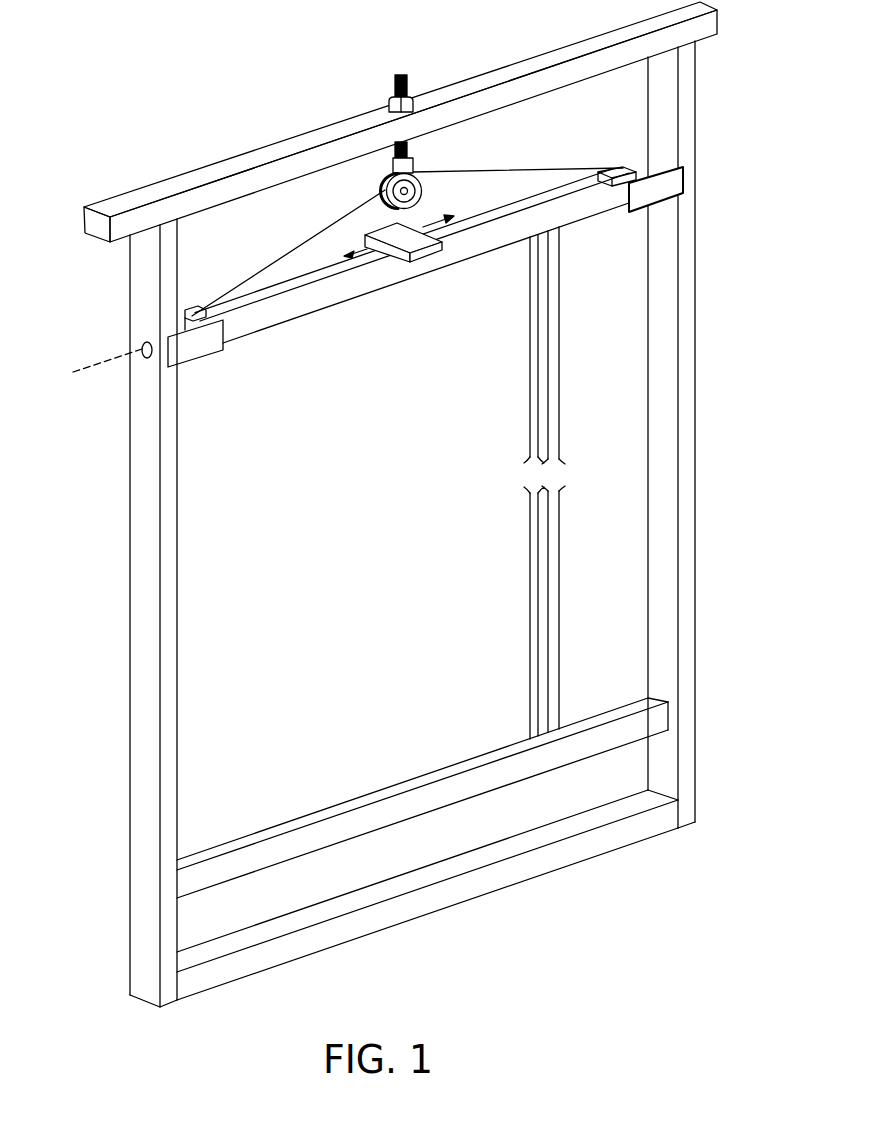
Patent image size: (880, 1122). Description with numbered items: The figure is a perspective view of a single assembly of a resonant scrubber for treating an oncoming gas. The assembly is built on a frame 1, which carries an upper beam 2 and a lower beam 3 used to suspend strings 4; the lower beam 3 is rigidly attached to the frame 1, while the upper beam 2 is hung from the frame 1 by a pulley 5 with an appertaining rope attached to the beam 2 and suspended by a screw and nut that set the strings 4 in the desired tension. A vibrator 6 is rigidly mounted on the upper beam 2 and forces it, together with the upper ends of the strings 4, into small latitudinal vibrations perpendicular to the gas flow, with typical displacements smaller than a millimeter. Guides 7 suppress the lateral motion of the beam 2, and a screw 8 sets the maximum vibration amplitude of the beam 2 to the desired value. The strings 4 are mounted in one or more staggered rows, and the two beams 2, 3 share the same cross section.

The frame 1 is at (663, 98).
The upper beam 2 is at (298, 305).
The lower beam 3 is at (283, 828).
The strings 4 is at (528, 642).
The pulley 5 is at (425, 188).
The vibrator 6 is at (425, 248).
The guides 7 is at (675, 183).
The screw 8 is at (112, 362).